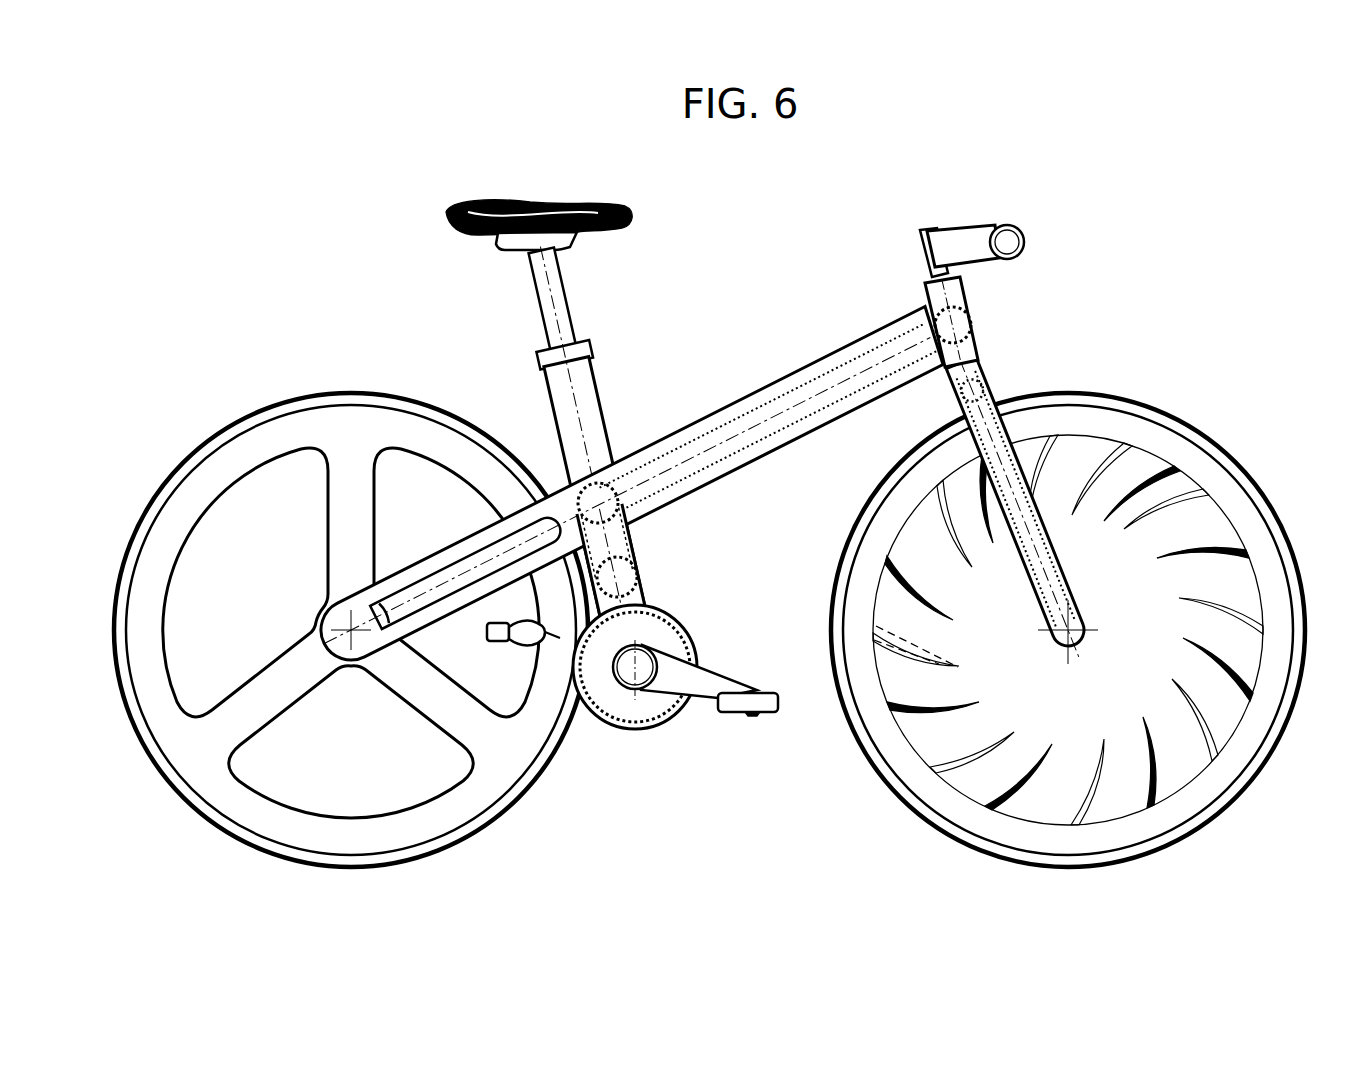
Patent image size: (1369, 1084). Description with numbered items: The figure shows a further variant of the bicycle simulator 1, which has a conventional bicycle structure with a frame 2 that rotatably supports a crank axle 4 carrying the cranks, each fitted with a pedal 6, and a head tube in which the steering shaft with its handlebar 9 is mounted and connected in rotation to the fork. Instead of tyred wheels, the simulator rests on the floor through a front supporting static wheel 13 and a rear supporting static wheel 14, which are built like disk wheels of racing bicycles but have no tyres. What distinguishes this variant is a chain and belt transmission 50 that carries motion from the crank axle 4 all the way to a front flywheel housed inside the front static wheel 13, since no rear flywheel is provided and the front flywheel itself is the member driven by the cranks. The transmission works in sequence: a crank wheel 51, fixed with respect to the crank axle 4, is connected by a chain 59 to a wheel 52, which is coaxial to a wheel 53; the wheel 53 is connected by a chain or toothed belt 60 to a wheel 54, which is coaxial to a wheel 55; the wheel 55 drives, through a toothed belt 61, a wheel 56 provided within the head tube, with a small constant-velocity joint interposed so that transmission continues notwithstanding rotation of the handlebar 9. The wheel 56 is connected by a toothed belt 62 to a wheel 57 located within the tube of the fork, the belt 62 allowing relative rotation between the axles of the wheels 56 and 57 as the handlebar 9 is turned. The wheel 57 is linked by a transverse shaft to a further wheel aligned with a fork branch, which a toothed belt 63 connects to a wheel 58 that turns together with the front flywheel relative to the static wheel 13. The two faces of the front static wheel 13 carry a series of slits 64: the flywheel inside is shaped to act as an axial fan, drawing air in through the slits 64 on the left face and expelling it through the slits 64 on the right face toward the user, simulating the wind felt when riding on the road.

The bicycle simulator 1 is at (709, 504).
The frame 2 is at (602, 436).
The crank axle 4 is at (678, 700).
The pedal 6 is at (768, 706).
The handlebar 9 is at (970, 212).
The front supporting static wheel 13 is at (1050, 589).
The rear supporting static wheel 14 is at (194, 426).
The chain and belt transmission 50 is at (735, 350).
The crank wheel 51 is at (697, 652).
The wheel 52 is at (640, 563).
The wheel 53 is at (637, 537).
The wheel 54 is at (663, 478).
The wheel 55 is at (622, 490).
The wheel 56 is at (999, 315).
The wheel 57 is at (958, 392).
The wheel 58 is at (1058, 637).
The chain 59 is at (650, 600).
The chain or toothed belt 60 is at (562, 470).
The toothed belt 61 is at (740, 420).
The toothed belt 62 is at (980, 345).
The toothed belt 63 is at (1005, 530).
The slits 64 is at (905, 585).